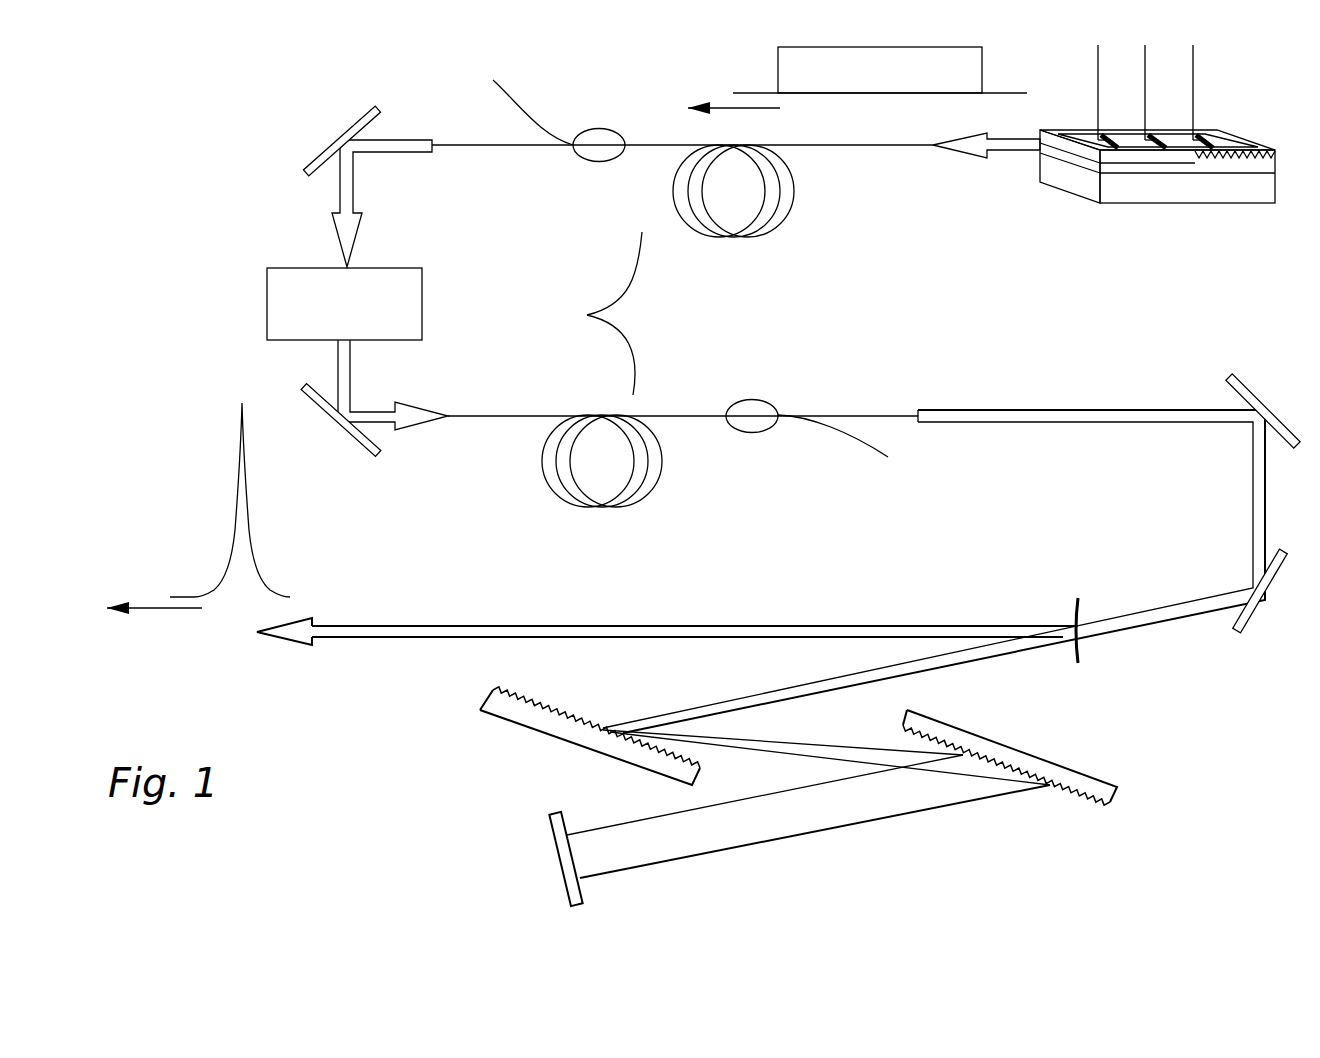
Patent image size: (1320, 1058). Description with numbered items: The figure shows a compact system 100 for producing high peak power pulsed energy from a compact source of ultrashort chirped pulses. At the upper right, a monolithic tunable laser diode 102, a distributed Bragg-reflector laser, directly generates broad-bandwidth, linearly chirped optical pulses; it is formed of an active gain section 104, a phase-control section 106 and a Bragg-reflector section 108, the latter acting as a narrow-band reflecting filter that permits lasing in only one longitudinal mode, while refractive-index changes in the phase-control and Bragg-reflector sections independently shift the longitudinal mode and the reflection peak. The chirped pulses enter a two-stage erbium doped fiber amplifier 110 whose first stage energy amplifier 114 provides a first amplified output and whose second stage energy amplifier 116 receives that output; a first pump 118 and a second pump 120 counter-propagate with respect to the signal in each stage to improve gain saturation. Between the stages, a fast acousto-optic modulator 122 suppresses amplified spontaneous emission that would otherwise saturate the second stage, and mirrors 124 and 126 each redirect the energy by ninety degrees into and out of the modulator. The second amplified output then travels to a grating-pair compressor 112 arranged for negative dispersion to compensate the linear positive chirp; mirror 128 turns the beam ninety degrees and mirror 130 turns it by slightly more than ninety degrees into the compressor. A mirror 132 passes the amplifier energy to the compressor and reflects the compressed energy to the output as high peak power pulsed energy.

The compact system 100 is at (222, 200).
The monolithic tunable laser diode 102 is at (1240, 138).
The active gain section 104 is at (1080, 135).
The phase-control section 106 is at (1128, 135).
The Bragg-reflector section 108 is at (1178, 135).
The two-stage erbium doped fiber amplifier 110 is at (592, 313).
The grating-pair compressor 112 is at (987, 802).
The first stage energy amplifier 114 is at (797, 185).
The second stage energy amplifier 116 is at (665, 458).
The first pump 118 is at (523, 138).
The second pump 120 is at (800, 438).
The acousto-optic modulator 122 is at (422, 302).
The mirror 124 is at (337, 135).
The mirror 126 is at (335, 430).
The mirror 128 is at (1263, 403).
The mirror 130 is at (1265, 597).
The mirror 132 is at (1078, 600).